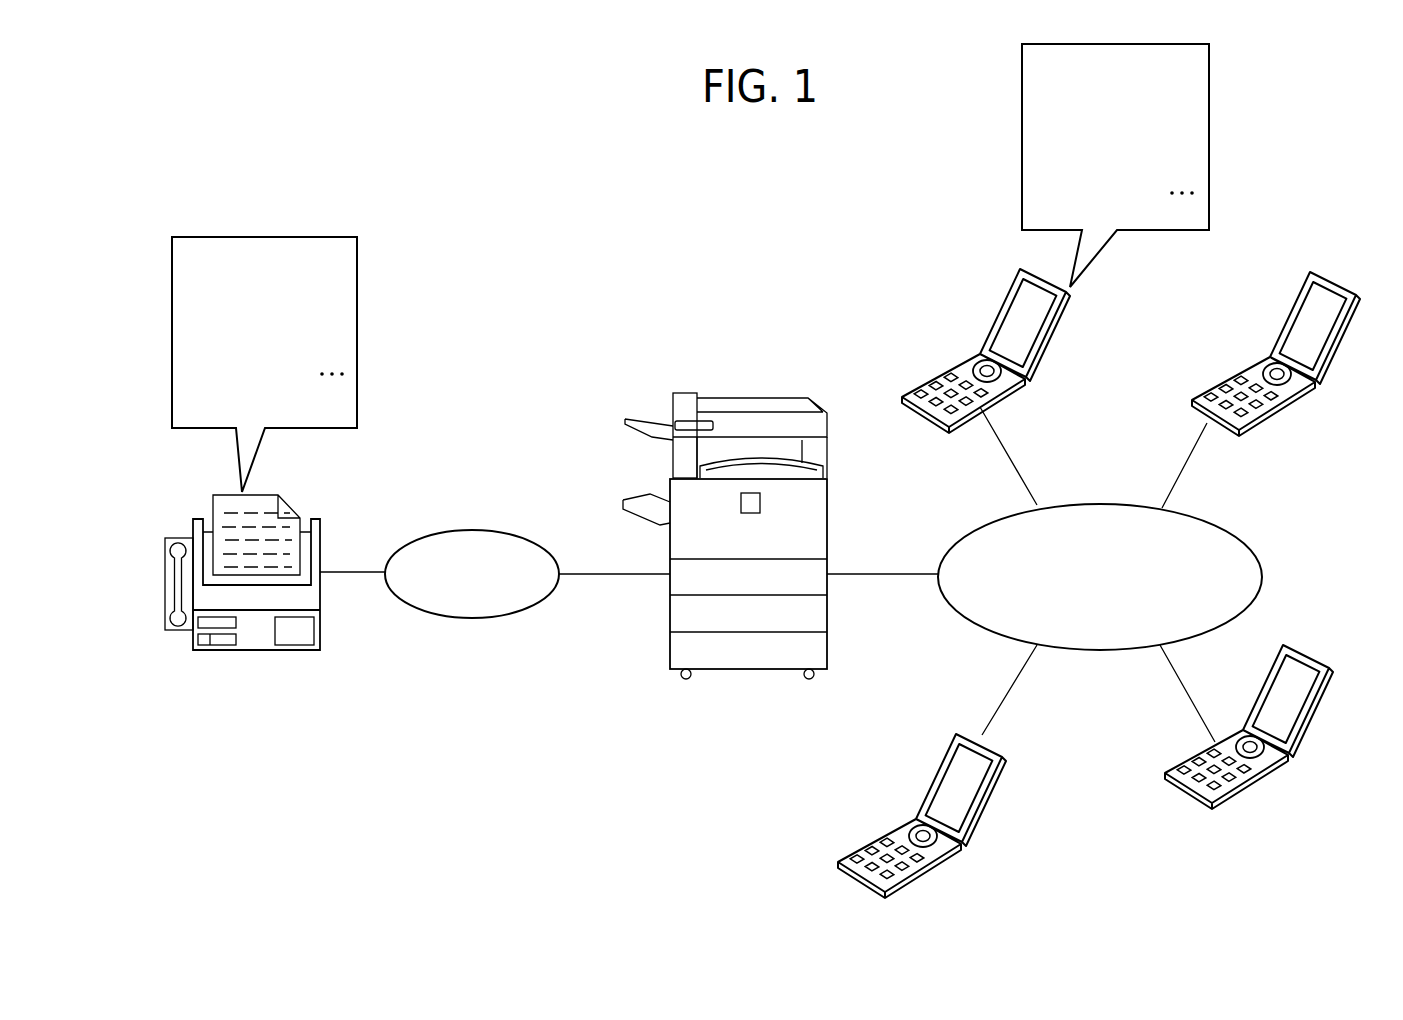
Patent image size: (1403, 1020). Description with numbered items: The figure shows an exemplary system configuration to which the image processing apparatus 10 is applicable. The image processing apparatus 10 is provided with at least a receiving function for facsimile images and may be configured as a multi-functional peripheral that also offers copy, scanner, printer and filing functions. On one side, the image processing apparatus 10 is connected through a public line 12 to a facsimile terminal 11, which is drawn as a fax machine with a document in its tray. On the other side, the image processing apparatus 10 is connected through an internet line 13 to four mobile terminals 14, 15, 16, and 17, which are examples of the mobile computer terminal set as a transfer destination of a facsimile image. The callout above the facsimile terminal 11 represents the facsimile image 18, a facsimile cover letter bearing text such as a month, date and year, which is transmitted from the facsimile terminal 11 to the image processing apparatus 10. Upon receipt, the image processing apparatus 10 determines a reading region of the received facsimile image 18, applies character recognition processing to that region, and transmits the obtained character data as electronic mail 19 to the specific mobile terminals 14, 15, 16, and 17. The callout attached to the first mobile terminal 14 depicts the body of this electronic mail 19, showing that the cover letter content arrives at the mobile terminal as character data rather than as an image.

The image processing apparatus 10 is at (755, 397).
The facsimile terminal 11 is at (255, 651).
The public line 12 is at (480, 529).
The internet line 13 is at (1092, 503).
The mobile terminal 14 is at (958, 360).
The mobile terminal 15 is at (1247, 360).
The mobile terminal 16 is at (892, 825).
The mobile terminal 17 is at (1250, 783).
The facsimile image 18 is at (357, 330).
The electronic mail 19 is at (1209, 138).